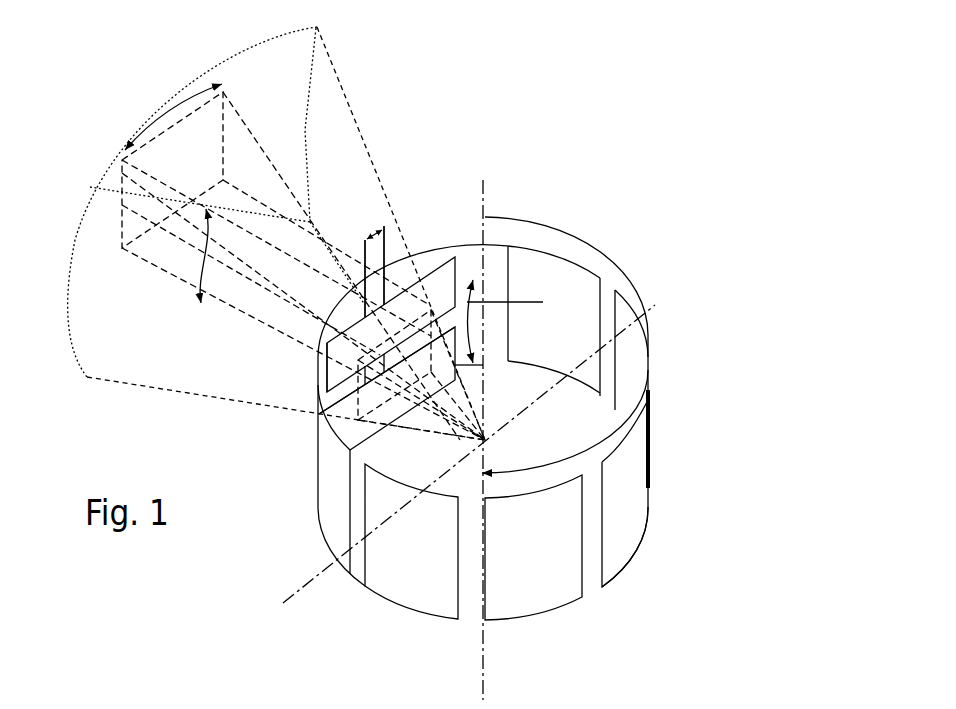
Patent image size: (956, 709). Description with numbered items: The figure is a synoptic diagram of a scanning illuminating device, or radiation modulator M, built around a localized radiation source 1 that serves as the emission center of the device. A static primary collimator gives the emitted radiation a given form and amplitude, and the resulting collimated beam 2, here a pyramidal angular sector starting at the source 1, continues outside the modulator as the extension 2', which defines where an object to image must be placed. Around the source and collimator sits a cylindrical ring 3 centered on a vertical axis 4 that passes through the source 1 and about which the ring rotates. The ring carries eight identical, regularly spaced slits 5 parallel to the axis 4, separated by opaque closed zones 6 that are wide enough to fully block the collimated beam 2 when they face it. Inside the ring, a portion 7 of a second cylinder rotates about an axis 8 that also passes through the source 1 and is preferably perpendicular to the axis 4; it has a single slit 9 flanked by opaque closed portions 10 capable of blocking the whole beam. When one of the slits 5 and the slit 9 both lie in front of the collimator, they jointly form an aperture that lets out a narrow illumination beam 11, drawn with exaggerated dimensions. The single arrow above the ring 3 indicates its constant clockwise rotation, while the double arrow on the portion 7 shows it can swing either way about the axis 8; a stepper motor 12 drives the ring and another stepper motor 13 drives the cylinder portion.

The radiation source 1 is at (485, 437).
The collimated beam 2 is at (401, 327).
The extension of the collimated beam 2' is at (276, 227).
The cylindrical ring 3 is at (316, 483).
The axis 4 is at (474, 492).
The slits 5 is at (345, 565).
The closed zones 6 is at (424, 614).
The portion of a second cylinder 7 is at (325, 371).
The axis of the cylinder portion 8 is at (538, 391).
The single slit 9 is at (320, 407).
The closed portions 10 is at (378, 322).
The illumination beam 11 is at (244, 131).
The stepper motor 12 is at (603, 418).
The stepper motor 13 is at (543, 302).
The radiation modulator M is at (706, 342).